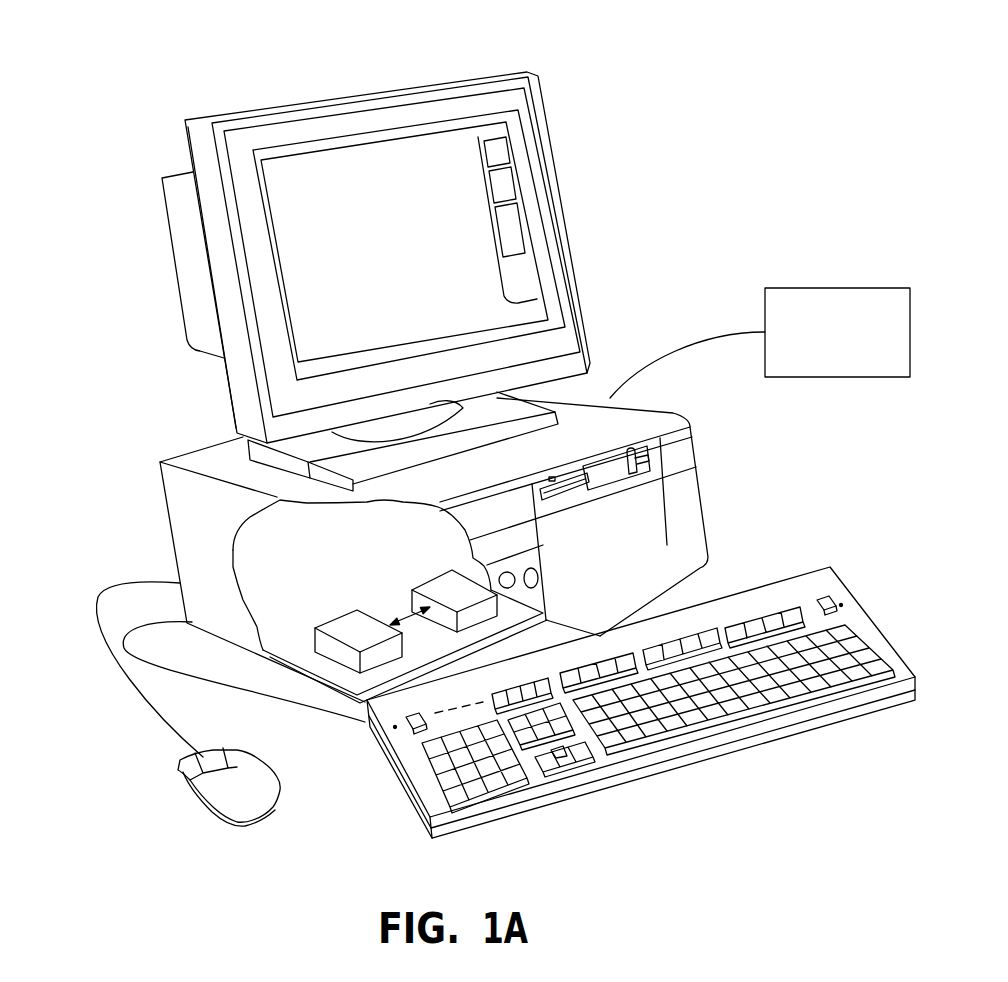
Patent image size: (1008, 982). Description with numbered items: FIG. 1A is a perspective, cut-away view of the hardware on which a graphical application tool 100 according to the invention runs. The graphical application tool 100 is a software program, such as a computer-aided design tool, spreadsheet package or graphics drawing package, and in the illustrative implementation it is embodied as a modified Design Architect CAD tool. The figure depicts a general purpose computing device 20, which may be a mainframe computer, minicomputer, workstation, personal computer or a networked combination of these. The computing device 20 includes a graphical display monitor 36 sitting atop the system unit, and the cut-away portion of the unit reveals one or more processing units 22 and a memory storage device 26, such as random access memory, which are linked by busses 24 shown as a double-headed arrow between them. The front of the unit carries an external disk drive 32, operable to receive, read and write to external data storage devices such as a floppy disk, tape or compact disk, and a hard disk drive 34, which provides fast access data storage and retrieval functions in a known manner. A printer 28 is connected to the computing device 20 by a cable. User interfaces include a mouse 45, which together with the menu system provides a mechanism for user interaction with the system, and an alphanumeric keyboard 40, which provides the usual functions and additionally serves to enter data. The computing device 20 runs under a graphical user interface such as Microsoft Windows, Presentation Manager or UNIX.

The graphical application tool 100 is at (117, 85).
The computing device 20 is at (603, 182).
The processing unit 22 is at (420, 586).
The busses 24 is at (396, 620).
The memory storage device 26 is at (326, 626).
The printer 28 is at (835, 288).
The external disk drive 32 is at (653, 466).
The hard disk drive 34 is at (613, 503).
The graphical display monitor 36 is at (221, 380).
The keyboard 40 is at (838, 572).
The mouse 45 is at (178, 762).